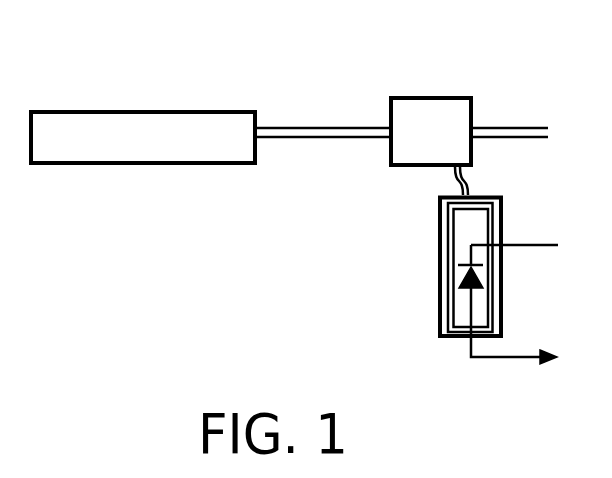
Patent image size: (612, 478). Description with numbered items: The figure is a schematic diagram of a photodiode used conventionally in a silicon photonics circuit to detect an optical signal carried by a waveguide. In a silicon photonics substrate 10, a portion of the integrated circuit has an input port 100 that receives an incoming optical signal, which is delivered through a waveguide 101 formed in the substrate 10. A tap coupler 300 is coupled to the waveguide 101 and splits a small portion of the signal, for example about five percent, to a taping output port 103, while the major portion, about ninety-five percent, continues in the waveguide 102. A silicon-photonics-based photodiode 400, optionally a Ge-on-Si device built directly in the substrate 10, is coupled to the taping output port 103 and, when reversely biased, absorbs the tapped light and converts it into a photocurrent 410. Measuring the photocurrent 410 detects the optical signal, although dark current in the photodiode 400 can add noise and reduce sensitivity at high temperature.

The silicon photonics substrate 10 is at (170, 237).
The input port 100 is at (168, 117).
The waveguide 101 is at (338, 128).
The waveguide 102 is at (540, 127).
The taping output port 103 is at (457, 181).
The tap coupler 300 is at (430, 93).
The photodiode 400 is at (447, 318).
The photocurrent 410 is at (513, 358).